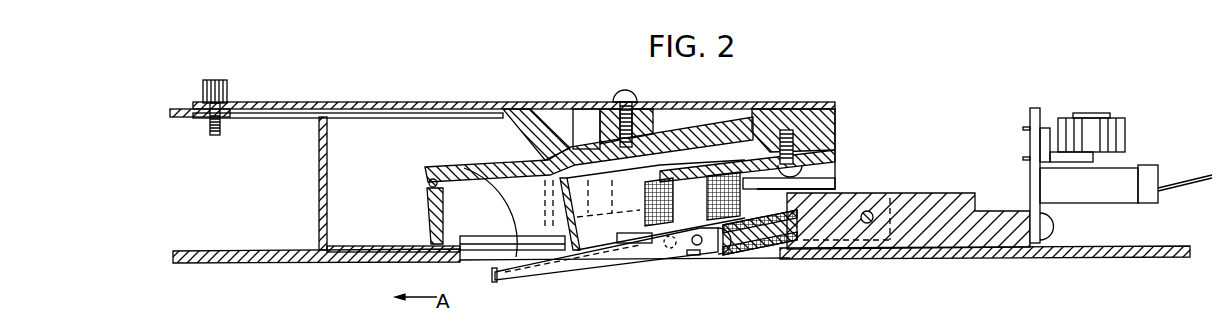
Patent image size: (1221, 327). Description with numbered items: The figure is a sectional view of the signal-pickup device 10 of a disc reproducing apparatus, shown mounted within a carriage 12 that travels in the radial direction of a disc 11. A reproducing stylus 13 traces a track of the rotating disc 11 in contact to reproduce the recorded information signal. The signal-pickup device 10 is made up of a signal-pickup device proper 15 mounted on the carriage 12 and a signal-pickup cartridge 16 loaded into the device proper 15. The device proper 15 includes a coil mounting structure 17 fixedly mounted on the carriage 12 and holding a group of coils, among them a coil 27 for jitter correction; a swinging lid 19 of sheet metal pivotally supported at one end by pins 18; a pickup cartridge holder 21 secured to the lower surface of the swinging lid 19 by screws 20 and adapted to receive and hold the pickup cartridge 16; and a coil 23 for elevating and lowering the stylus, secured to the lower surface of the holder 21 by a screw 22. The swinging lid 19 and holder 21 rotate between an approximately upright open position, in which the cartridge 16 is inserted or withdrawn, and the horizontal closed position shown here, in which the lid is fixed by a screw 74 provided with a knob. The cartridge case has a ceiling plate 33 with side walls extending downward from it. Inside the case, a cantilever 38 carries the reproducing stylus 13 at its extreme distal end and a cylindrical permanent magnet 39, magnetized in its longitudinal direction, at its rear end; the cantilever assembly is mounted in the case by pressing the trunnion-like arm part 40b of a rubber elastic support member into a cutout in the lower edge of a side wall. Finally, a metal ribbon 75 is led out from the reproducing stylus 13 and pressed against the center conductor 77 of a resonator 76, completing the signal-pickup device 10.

The signal-pickup device 10 is at (868, 73).
The disc 11 is at (700, 284).
The carriage 12 is at (972, 258).
The reproducing stylus 13 is at (490, 280).
The signal-pickup device proper 15 is at (842, 114).
The signal-pickup cartridge 16 is at (447, 157).
The coil mounting structure 17 is at (946, 192).
The pins 18 is at (876, 208).
The swinging lid 19 is at (483, 101).
The screws 20 is at (632, 91).
The pickup cartridge holder 21 is at (782, 115).
The screw 22 is at (815, 148).
The coil for elevating and lowering the stylus 23 is at (803, 183).
The coil for jitter correction 27 is at (787, 242).
The ceiling plate 33 is at (737, 132).
The cantilever 38 is at (562, 266).
The permanent magnet 39 is at (716, 257).
The arm part 40b is at (700, 257).
The screw 74 is at (217, 79).
The metal ribbon 75 is at (500, 194).
The resonator 76 is at (365, 126).
The center conductor 77 is at (427, 184).